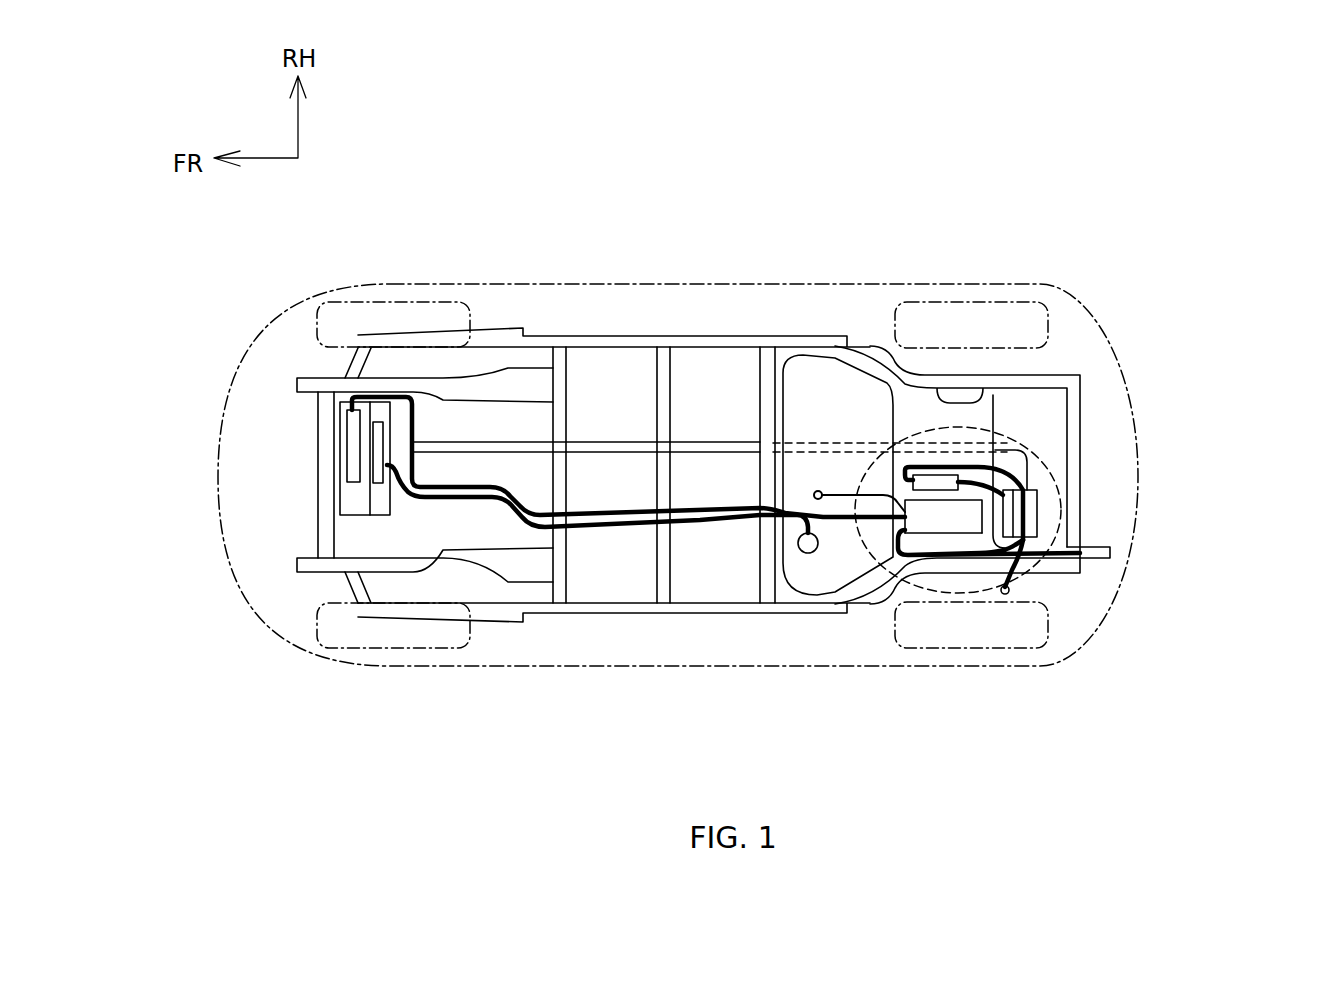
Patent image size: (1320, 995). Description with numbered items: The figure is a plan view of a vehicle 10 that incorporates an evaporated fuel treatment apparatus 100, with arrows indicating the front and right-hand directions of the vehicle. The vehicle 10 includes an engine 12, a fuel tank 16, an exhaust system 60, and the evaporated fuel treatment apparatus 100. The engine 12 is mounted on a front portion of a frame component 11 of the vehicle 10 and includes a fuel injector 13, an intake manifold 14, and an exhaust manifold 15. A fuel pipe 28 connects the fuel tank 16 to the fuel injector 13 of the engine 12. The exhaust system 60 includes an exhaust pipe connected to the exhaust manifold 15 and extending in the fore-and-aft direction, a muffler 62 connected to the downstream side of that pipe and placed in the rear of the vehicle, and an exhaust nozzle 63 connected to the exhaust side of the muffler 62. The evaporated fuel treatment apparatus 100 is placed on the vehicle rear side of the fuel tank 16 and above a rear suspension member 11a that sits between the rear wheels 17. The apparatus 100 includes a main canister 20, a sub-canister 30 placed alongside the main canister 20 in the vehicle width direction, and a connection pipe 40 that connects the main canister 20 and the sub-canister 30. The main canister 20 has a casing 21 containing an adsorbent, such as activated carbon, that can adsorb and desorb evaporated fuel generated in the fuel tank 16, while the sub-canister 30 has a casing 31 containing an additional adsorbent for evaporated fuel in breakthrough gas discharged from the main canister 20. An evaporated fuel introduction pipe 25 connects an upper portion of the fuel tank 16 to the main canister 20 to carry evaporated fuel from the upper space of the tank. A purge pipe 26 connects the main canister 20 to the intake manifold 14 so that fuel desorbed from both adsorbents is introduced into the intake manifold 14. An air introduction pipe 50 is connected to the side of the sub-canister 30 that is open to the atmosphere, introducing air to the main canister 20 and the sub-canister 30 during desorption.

The vehicle 10 is at (1060, 300).
The frame component 11 is at (601, 336).
The rear suspension member 11a is at (983, 420).
The engine 12 is at (347, 498).
The fuel injector 13 is at (380, 507).
The intake manifold 14 is at (353, 443).
The exhaust manifold 15 is at (407, 433).
The fuel tank 16 is at (803, 350).
The rear wheels 17 is at (1012, 302).
The main canister 20 is at (925, 538).
The casing 21 is at (943, 535).
The evaporated fuel introduction pipe 25 is at (842, 463).
The purge pipe 26 is at (619, 510).
The fuel pipe 28 is at (702, 517).
The sub-canister 30 is at (938, 472).
The casing 31 is at (930, 466).
The connection pipe 40 is at (960, 553).
The air introduction pipe 50 is at (1020, 558).
The exhaust system 60 is at (1040, 512).
The muffler 62 is at (1042, 514).
The exhaust nozzle 63 is at (1103, 560).
The evaporated fuel treatment apparatus 100 is at (1053, 447).